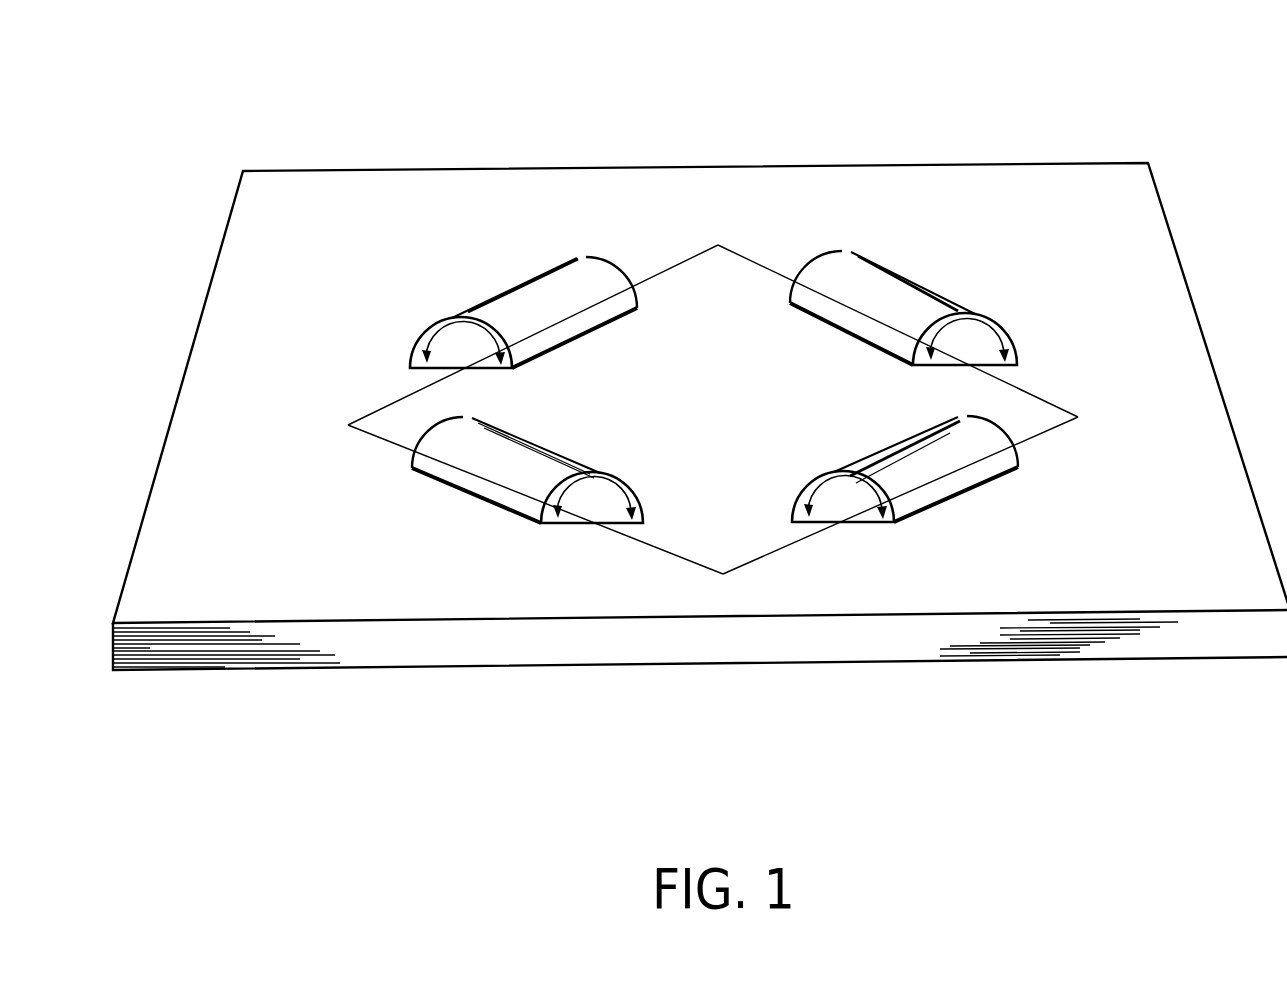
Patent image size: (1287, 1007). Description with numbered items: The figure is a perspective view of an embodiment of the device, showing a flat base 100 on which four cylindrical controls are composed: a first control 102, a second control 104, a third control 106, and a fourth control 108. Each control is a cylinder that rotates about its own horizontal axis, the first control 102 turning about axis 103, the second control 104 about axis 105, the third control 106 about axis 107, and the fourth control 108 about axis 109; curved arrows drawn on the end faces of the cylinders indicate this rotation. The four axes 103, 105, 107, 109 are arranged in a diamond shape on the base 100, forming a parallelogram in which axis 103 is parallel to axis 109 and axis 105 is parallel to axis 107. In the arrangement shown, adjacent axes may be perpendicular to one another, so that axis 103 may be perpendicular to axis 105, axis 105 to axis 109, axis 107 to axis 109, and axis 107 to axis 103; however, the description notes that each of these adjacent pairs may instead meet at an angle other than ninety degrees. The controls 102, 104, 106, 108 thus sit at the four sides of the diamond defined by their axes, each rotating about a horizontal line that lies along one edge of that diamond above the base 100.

The base 100 is at (878, 165).
The first control 102 is at (513, 500).
The horizontal axis 103 is at (418, 450).
The second control 104 is at (920, 497).
The horizontal axis 105 is at (1033, 433).
The third control 106 is at (517, 288).
The horizontal axis 107 is at (670, 267).
The fourth control 108 is at (910, 310).
The horizontal axis 109 is at (772, 268).